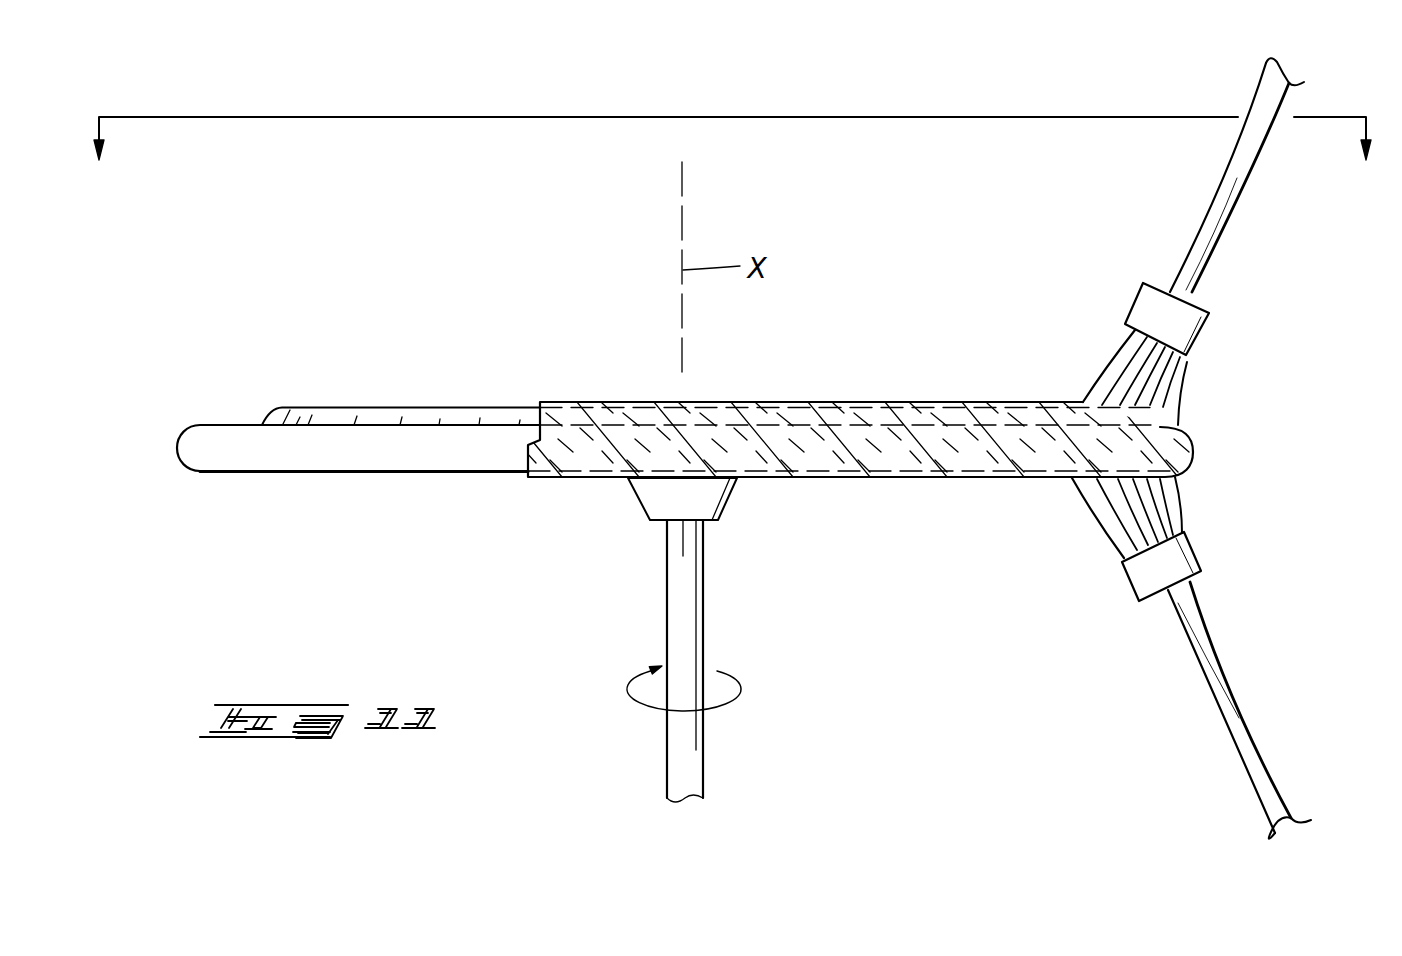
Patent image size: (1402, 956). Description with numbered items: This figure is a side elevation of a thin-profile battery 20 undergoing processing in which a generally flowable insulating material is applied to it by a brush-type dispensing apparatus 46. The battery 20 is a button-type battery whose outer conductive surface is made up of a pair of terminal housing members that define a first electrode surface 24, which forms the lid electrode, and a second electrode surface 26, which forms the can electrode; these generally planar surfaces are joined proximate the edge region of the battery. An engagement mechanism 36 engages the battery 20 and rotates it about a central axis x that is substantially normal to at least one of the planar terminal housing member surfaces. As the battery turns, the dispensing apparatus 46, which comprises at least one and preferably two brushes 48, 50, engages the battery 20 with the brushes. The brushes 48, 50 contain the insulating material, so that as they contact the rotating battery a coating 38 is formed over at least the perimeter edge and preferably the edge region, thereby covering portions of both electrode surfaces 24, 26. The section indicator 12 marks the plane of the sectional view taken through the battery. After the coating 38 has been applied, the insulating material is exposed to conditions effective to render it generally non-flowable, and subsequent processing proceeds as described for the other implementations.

The section line of FIG. 12 is at (727, 156).
The battery 20 is at (224, 322).
The first electrode surface 24 is at (426, 407).
The second electrode surface 26 is at (393, 476).
The engagement mechanism 36 is at (667, 600).
The coating 38 is at (898, 404).
The dispensing apparatus 46 is at (1106, 182).
The brush 48 is at (1138, 302).
The brush 50 is at (1137, 572).